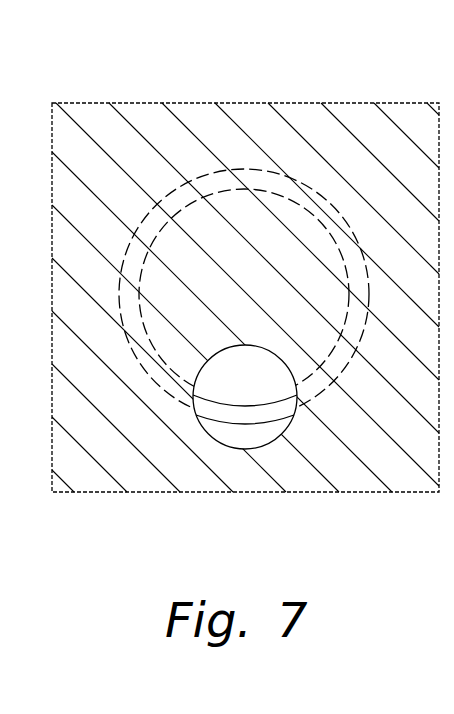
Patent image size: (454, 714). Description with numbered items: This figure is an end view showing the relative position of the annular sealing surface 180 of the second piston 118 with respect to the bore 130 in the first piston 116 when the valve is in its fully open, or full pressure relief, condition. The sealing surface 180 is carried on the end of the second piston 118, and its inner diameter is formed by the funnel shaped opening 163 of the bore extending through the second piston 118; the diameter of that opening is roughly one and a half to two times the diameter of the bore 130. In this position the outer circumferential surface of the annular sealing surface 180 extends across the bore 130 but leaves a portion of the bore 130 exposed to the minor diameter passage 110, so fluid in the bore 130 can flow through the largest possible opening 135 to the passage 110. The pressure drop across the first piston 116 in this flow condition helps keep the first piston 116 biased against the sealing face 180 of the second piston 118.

The passage 110 is at (245, 299).
The first piston 116 is at (152, 118).
The second piston 118 is at (305, 187).
The funnel shaped opening 163 is at (237, 216).
The bore 130 is at (266, 390).
The annular sealing surface 180 is at (243, 414).
The opening 135 is at (272, 432).